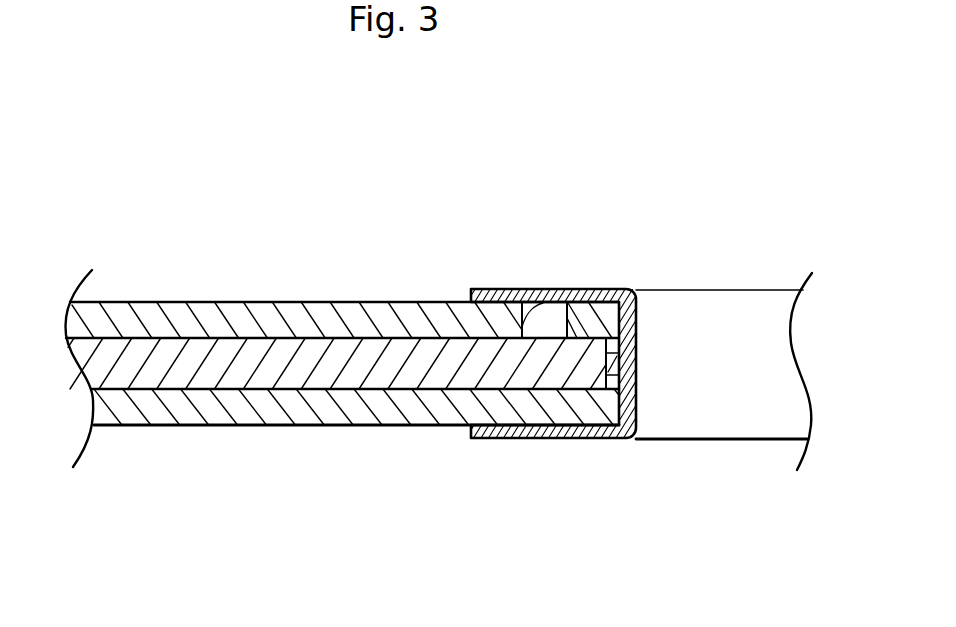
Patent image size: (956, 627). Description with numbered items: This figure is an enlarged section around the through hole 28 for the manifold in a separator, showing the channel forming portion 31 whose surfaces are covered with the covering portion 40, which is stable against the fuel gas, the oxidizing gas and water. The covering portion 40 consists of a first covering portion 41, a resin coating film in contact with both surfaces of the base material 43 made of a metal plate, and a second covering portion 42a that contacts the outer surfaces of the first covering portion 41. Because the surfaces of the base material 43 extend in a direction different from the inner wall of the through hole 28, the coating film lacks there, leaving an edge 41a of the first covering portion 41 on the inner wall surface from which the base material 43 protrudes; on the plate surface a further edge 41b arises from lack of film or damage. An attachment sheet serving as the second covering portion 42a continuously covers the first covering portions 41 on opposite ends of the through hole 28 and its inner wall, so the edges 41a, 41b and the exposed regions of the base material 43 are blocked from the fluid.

The through hole for the manifold 28 is at (733, 323).
The channel forming portion 31 is at (135, 302).
The covering portion 40 is at (348, 296).
The first covering portion 41 is at (236, 310).
The edge of the first covering portion 41a is at (635, 368).
The edge of the first covering portion 41b is at (547, 289).
The second covering portion 42a is at (585, 289).
The base material 43 is at (176, 352).